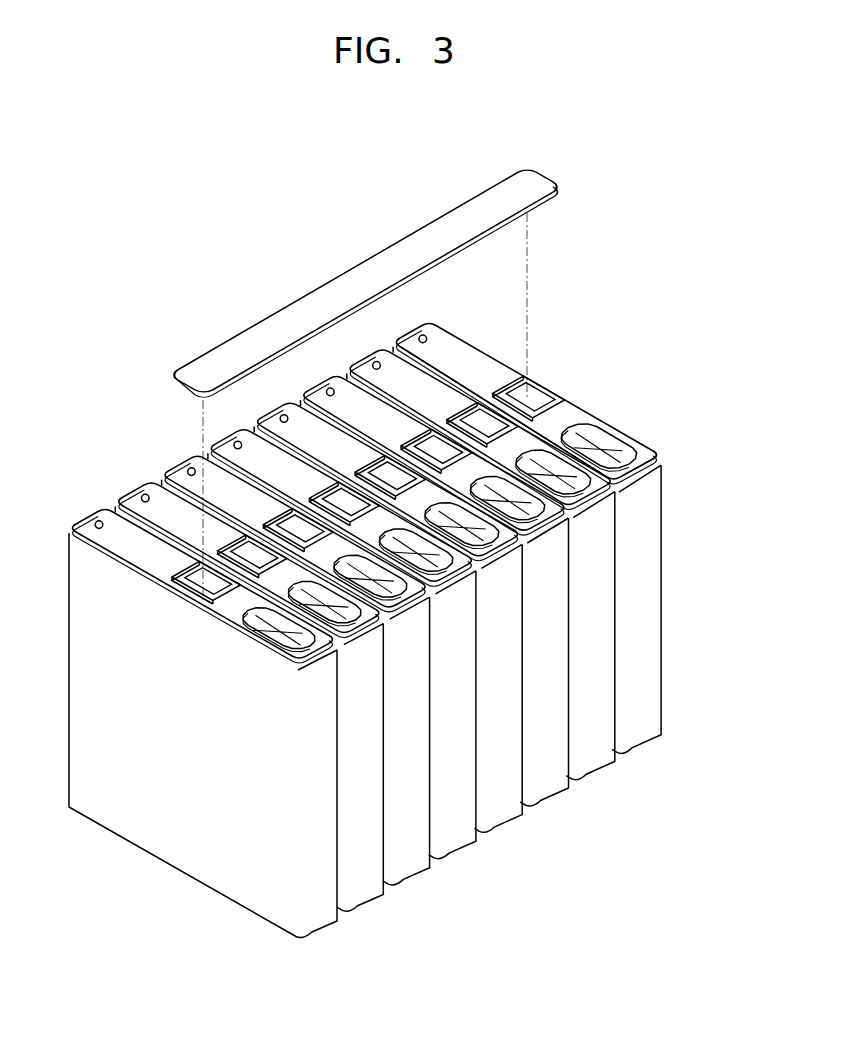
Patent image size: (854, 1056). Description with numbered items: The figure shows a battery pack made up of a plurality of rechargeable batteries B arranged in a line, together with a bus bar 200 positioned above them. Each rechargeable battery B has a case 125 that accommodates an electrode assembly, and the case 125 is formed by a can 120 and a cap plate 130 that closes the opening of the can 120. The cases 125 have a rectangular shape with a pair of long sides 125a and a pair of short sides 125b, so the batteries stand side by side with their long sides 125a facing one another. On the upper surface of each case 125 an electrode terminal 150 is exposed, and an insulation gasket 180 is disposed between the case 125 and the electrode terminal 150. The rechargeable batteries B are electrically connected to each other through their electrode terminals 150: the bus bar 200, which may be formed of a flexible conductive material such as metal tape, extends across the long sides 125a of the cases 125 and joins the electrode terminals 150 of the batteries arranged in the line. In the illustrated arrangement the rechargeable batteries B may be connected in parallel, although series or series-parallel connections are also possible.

The bus bar 200 is at (350, 275).
The case 125 is at (434, 624).
The can 120 is at (655, 537).
The cap plate 130 is at (665, 453).
The electrode terminal 150 is at (518, 377).
The insulation gasket 180 is at (542, 388).
The long side 125a is at (583, 410).
The short side 125b is at (647, 456).
The rechargeable battery B is at (647, 757).